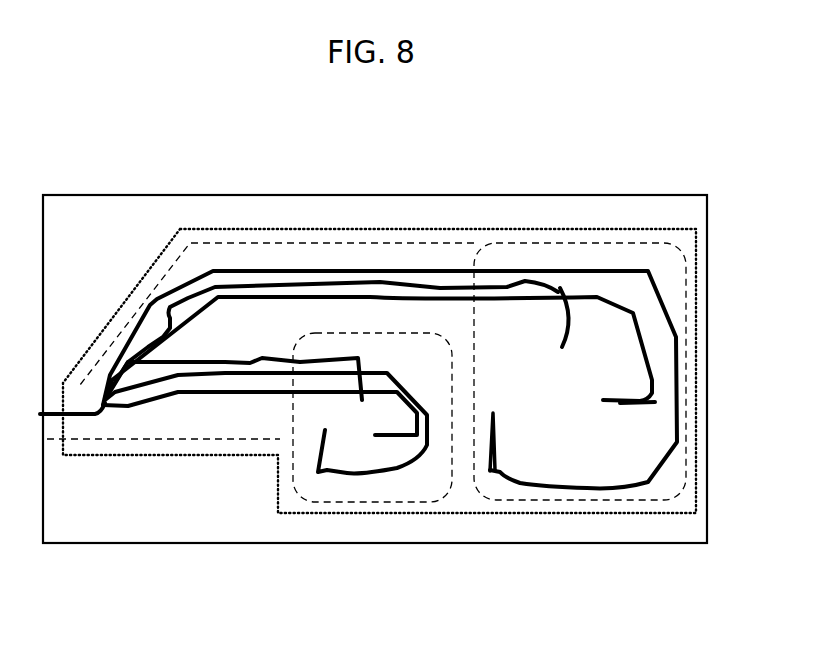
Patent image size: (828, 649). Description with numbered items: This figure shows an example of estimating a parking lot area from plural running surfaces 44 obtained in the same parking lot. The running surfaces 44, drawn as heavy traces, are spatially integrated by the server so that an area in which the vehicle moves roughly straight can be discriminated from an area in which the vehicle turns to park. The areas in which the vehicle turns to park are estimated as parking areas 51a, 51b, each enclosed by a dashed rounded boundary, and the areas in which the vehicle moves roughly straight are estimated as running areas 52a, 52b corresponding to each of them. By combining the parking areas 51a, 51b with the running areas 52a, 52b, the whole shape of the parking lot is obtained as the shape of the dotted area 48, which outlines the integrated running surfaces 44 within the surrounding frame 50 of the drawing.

The running surface 44 is at (437, 271).
The dotted area 48 is at (123, 455).
The circuit board outline 50 is at (597, 195).
The parking area 51a is at (580, 500).
The parking area 51b is at (383, 502).
The running area 52a is at (240, 314).
The running area 52b is at (198, 422).